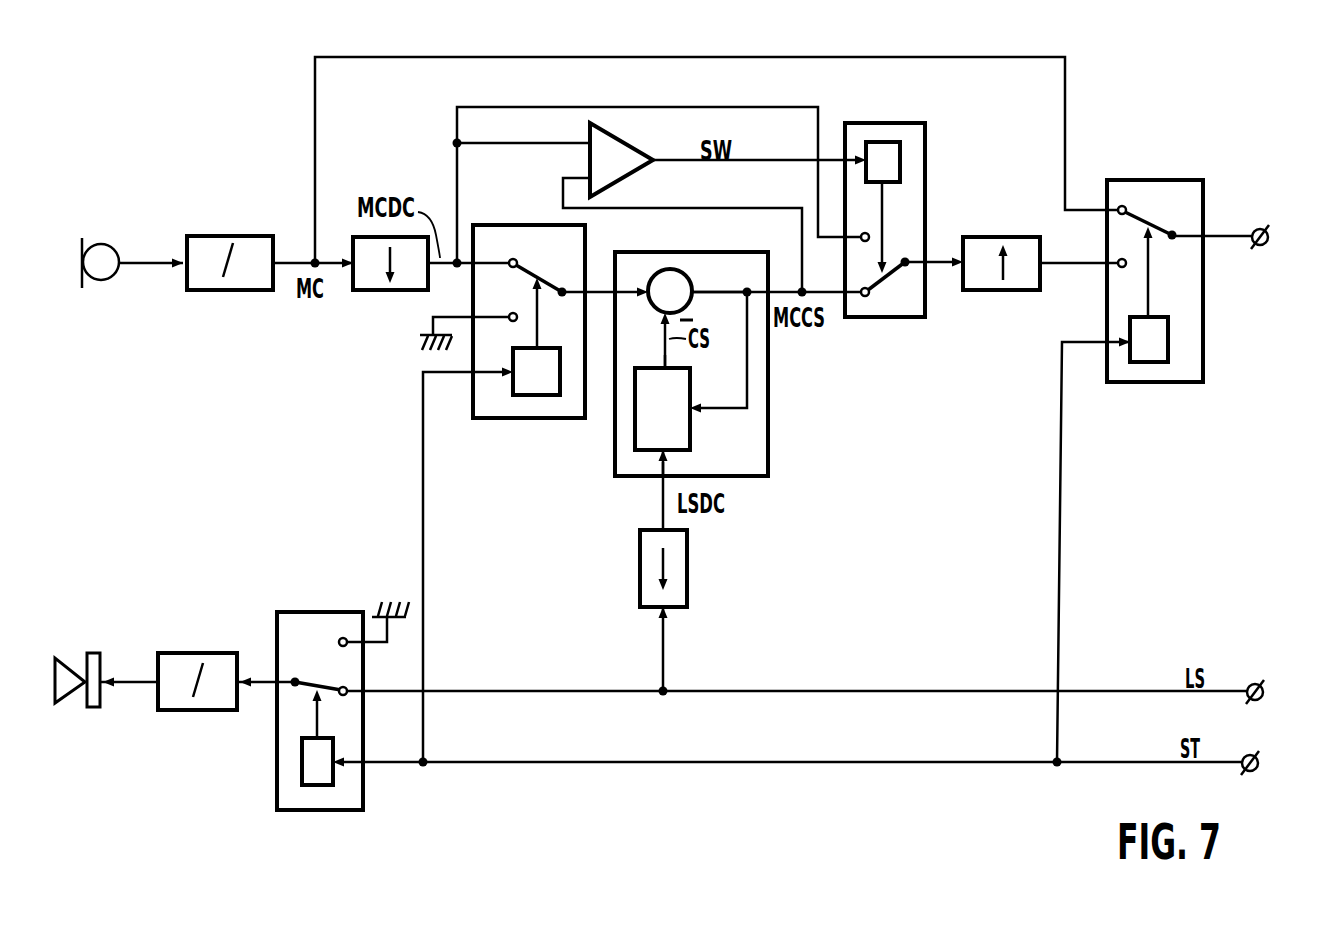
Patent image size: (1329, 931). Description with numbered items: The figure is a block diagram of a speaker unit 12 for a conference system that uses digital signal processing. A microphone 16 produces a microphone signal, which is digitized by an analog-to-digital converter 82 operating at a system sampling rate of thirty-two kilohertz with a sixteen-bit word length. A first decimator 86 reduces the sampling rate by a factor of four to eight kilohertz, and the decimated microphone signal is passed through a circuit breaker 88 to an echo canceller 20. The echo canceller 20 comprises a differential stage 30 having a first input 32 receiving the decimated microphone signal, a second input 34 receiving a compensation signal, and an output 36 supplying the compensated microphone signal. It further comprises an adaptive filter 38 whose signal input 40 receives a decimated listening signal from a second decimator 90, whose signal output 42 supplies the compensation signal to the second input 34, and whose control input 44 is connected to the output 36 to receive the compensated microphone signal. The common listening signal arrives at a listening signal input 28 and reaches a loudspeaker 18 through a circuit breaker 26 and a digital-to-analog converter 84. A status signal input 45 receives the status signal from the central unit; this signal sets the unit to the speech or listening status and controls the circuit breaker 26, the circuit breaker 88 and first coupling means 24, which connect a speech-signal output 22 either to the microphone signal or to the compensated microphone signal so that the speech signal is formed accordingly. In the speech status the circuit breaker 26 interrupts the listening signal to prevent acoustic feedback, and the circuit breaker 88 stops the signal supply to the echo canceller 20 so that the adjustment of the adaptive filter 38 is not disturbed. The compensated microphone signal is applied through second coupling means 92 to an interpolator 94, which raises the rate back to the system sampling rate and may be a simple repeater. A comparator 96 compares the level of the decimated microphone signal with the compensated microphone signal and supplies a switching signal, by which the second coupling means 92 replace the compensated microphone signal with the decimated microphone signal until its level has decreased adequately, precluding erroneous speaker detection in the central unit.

The speaker unit 12 is at (901, 534).
The microphone 16 is at (103, 285).
The loudspeaker 18 is at (73, 704).
The echo canceller 20 is at (768, 404).
The speech-signal output 22 is at (1268, 240).
The first coupling means 24 is at (1138, 383).
The circuit breaker 26 is at (323, 795).
The listening signal input 28 is at (1263, 694).
The differential stage 30 is at (689, 277).
The first input 32 is at (647, 299).
The second input 34 is at (661, 320).
The output 36 is at (690, 299).
The adaptive filter 38 is at (695, 406).
The signal input 40 is at (680, 456).
The signal output 42 is at (688, 368).
The control input 44 is at (691, 430).
The status signal input 45 is at (1258, 766).
The analog-to-digital converter 82 is at (210, 291).
The digital-to-analog converter 84 is at (222, 711).
The first decimator 86 is at (363, 291).
The circuit breaker 88 is at (510, 419).
The second decimator 90 is at (689, 551).
The second coupling means 92 is at (878, 318).
The interpolator 94 is at (992, 291).
The comparator 96 is at (613, 153).